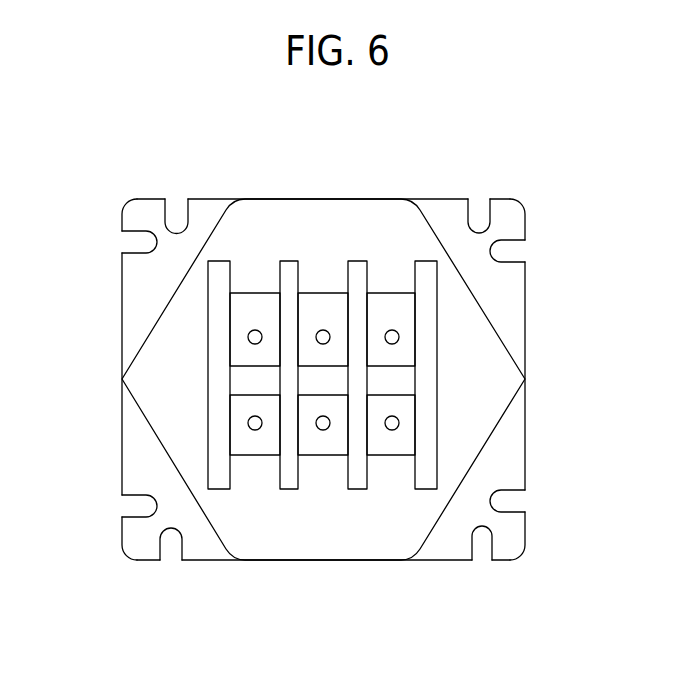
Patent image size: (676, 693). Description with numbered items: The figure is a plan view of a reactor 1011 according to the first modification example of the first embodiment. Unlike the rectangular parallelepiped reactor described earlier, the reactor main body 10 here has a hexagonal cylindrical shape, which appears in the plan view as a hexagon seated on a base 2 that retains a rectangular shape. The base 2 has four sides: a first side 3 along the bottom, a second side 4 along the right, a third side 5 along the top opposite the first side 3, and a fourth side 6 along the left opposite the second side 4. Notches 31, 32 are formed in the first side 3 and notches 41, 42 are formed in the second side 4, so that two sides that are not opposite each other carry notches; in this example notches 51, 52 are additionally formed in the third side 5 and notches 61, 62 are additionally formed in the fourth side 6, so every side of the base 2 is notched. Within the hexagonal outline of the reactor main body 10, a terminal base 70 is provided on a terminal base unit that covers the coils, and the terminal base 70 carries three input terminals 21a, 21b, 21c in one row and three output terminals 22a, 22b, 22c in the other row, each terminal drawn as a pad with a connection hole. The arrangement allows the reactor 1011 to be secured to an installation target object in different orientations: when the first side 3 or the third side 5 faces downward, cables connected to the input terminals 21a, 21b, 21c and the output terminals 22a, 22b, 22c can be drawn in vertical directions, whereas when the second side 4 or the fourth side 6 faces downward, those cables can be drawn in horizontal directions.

The reactor 1011 is at (548, 141).
The base 2 is at (507, 462).
The first side 3 is at (438, 562).
The second side 4 is at (525, 414).
The third side 5 is at (437, 204).
The fourth side 6 is at (121, 323).
The reactor main body 10 is at (490, 340).
The input terminal 21a is at (257, 447).
The input terminal 21b is at (325, 447).
The input terminal 21c is at (391, 447).
The output terminal 22a is at (255, 305).
The output terminal 22b is at (323, 305).
The output terminal 22c is at (392, 305).
The notch 31 is at (178, 530).
The notch 32 is at (482, 530).
The notch 41 is at (493, 506).
The notch 42 is at (492, 248).
The notch 51 is at (477, 210).
The notch 52 is at (173, 210).
The notch 61 is at (135, 232).
The notch 62 is at (135, 501).
The terminal base 70 is at (430, 290).